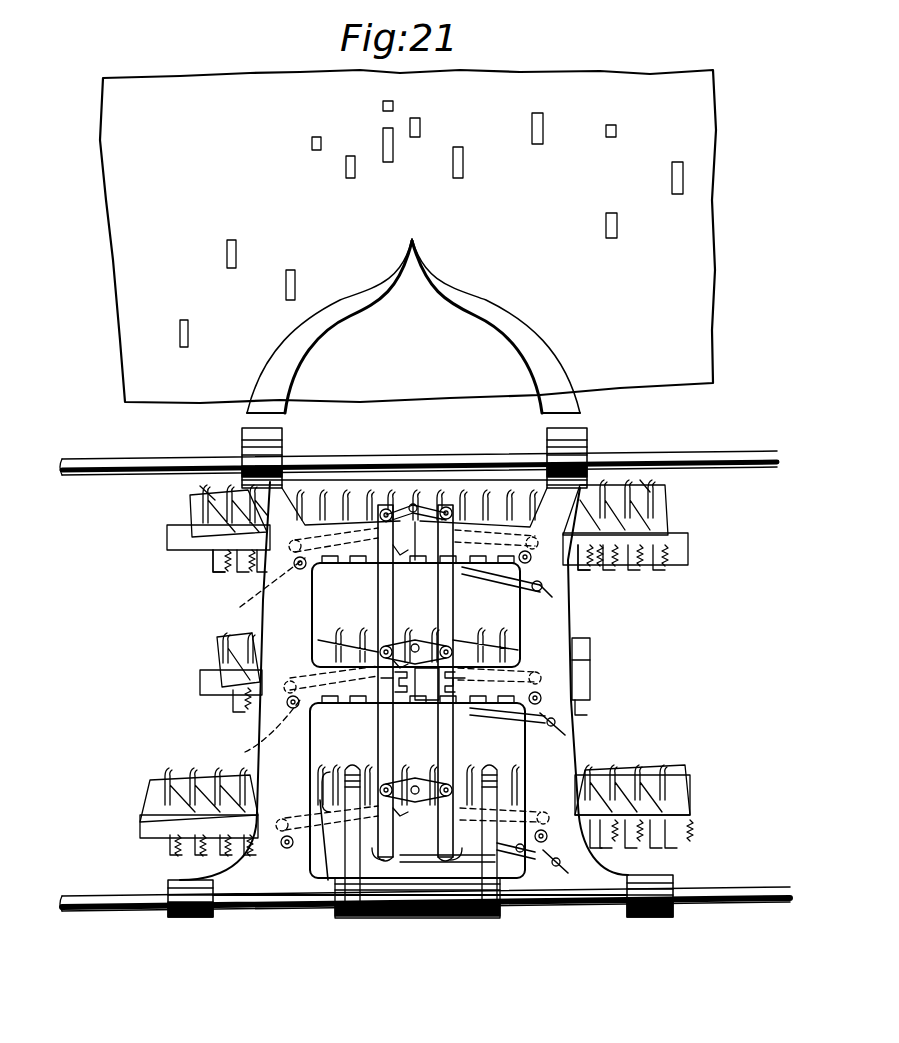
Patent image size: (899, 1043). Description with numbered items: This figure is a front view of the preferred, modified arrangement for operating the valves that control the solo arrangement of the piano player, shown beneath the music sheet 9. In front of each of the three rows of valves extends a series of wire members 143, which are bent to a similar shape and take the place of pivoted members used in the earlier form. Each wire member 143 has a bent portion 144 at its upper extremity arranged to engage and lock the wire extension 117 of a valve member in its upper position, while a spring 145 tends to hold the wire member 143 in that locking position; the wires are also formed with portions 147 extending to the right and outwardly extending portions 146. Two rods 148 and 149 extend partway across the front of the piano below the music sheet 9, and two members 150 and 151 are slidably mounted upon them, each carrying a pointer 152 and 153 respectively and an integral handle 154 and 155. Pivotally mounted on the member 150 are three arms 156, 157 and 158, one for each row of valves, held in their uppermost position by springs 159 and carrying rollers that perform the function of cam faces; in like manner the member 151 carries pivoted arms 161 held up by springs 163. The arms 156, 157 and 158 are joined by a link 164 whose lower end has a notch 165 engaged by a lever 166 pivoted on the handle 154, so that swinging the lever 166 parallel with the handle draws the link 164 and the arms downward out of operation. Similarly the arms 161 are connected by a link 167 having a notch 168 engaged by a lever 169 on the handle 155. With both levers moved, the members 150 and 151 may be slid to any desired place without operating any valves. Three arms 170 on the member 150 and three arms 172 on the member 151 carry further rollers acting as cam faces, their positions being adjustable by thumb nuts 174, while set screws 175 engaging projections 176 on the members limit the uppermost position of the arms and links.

The music sheet 9 is at (408, 236).
The wire extension 117 is at (660, 500).
The wire member 143 is at (210, 527).
The bent portion 144 is at (205, 490).
The spring 145 is at (680, 552).
The outwardly extending portion 146 is at (685, 843).
The rightward extending portion 147 is at (225, 572).
The rod 148 is at (700, 458).
The rod 149 is at (720, 900).
The slidable member 150 is at (268, 725).
The slidable member 151 is at (575, 615).
The pointer 152 is at (338, 312).
The pointer 153 is at (458, 292).
The handle 154 is at (355, 872).
The handle 155 is at (497, 765).
The pivoted arm 156 is at (362, 527).
The pivoted arm 157 is at (370, 662).
The pivoted arm 158 is at (380, 800).
The spring 159 is at (260, 661).
The pivoted arm 161 is at (470, 525).
The spring 163 is at (560, 570).
The link 164 is at (385, 750).
The notch 165 is at (380, 850).
The lever 166 is at (330, 800).
The link 167 is at (446, 614).
The notch 168 is at (480, 917).
The lever 169 is at (540, 775).
The arm 170 is at (418, 568).
The arm 172 is at (498, 575).
The thumb nut 174 is at (540, 715).
The set screw 175 is at (385, 690).
The projection 176 is at (330, 663).